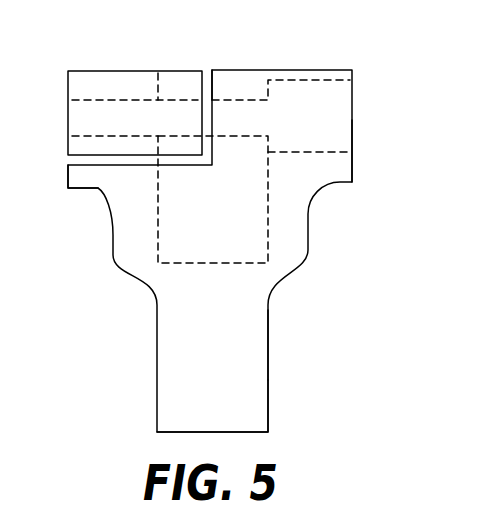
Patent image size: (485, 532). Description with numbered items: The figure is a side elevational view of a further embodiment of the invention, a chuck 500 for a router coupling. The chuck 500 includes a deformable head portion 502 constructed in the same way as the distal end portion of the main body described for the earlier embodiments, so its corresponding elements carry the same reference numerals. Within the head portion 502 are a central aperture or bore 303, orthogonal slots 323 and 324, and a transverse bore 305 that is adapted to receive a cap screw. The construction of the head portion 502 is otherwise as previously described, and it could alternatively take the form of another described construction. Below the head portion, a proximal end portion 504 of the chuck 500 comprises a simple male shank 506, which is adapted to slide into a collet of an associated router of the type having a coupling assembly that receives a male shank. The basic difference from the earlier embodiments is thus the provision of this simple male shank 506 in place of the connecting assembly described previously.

The chuck 500 is at (333, 236).
The deformable head portion 502 is at (352, 163).
The proximal end portion 504 is at (269, 340).
The male shank 506 is at (240, 387).
The central aperture or bore 303 is at (207, 265).
The transverse bore 305 is at (105, 100).
The orthogonal slot 323 is at (113, 165).
The orthogonal slot 324 is at (212, 88).